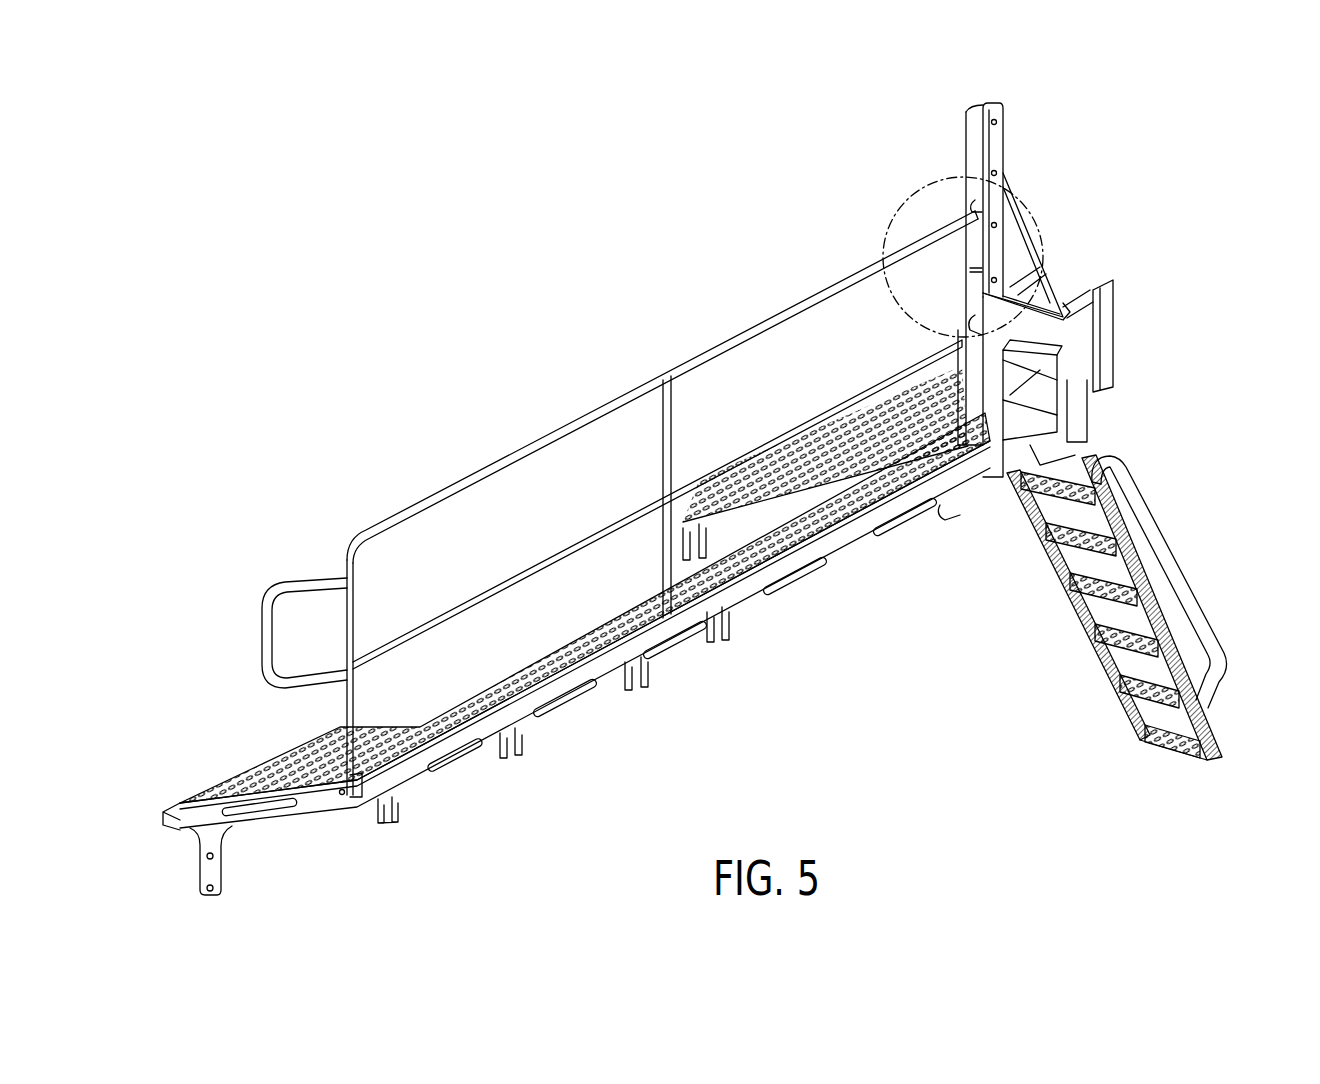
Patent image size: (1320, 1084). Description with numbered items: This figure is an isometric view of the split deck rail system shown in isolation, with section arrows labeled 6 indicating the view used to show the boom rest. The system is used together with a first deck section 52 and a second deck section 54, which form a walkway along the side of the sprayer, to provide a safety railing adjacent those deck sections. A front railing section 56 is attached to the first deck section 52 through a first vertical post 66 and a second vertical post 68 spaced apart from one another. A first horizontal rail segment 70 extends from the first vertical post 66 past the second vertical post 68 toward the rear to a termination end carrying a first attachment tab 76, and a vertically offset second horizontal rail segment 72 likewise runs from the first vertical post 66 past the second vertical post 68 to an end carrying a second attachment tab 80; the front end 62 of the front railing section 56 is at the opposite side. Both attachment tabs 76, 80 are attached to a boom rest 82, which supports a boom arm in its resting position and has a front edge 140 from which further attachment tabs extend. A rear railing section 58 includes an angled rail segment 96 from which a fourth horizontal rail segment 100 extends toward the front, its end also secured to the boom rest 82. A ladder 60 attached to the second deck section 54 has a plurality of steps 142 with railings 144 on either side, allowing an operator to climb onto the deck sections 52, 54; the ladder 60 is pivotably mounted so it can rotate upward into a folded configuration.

The first deck section 52 is at (566, 634).
The second deck section 54 is at (798, 572).
The front railing section 56 is at (580, 504).
The rear railing section 58 is at (1050, 220).
The ladder 60 is at (1095, 625).
The front end 62 is at (238, 643).
The first vertical post 66 is at (350, 700).
The second vertical post 68 is at (663, 548).
The first horizontal rail segment 70 is at (397, 518).
The second horizontal rail segment 72 is at (440, 625).
The first attachment tab 76 is at (974, 198).
The second attachment tab 80 is at (947, 337).
The boom rest 82 is at (1136, 237).
The angled rail segment 96 is at (1055, 240).
The fourth horizontal rail segment 100 is at (1018, 278).
The front edge 140 is at (973, 263).
The steps 142 is at (1078, 600).
The railings 144 is at (1172, 568).
The section view indicator 6 is at (1003, 173).